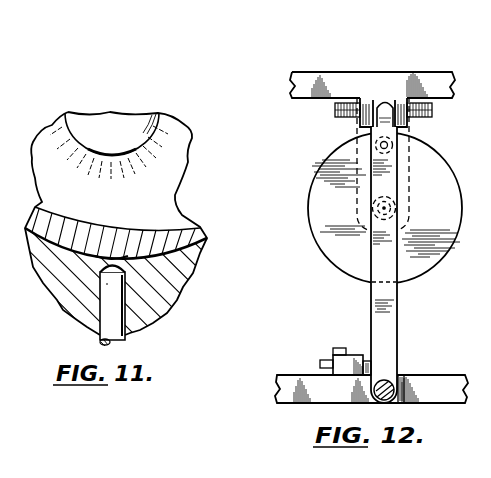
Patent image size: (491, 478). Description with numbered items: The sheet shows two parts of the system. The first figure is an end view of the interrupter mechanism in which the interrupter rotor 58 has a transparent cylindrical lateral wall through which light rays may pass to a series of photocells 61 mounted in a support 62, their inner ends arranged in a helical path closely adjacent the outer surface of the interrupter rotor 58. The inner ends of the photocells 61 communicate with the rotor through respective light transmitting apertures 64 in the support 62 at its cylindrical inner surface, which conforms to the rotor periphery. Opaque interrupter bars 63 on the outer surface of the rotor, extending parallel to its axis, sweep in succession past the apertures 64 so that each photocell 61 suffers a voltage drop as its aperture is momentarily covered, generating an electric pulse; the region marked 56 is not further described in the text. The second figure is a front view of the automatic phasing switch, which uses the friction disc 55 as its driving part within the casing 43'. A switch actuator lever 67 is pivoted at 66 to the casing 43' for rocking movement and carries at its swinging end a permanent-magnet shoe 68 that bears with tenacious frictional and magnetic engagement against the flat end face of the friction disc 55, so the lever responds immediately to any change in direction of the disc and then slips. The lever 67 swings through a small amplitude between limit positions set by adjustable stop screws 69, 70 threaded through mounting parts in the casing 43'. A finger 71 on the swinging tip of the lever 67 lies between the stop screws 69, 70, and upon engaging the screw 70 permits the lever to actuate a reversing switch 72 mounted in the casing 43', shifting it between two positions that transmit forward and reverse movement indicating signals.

In FIG. 11, the cup-shaped recess 56 is at (109, 146).
In FIG. 11, the interrupter rotor 58 is at (61, 231).
In FIG. 11, the interrupter bars 63 is at (110, 254).
In FIG. 11, the light transmitting apertures 64 is at (118, 256).
In FIG. 11, the support 62 is at (200, 266).
In FIG. 11, the photocells 61 is at (108, 328).
In FIG. 12, the casing 43' is at (371, 227).
In FIG. 12, the friction disc 55 is at (452, 245).
In FIG. 12, the shoe 68 is at (411, 130).
In FIG. 12, the stop screw 70 is at (335, 110).
In FIG. 12, the stop screws 69 is at (432, 110).
In FIG. 12, the finger 71 is at (387, 102).
In FIG. 12, the switch actuator lever 67 is at (398, 318).
In FIG. 12, the reversing switch 72 is at (351, 363).
In FIG. 12, the pivot 66 is at (380, 401).